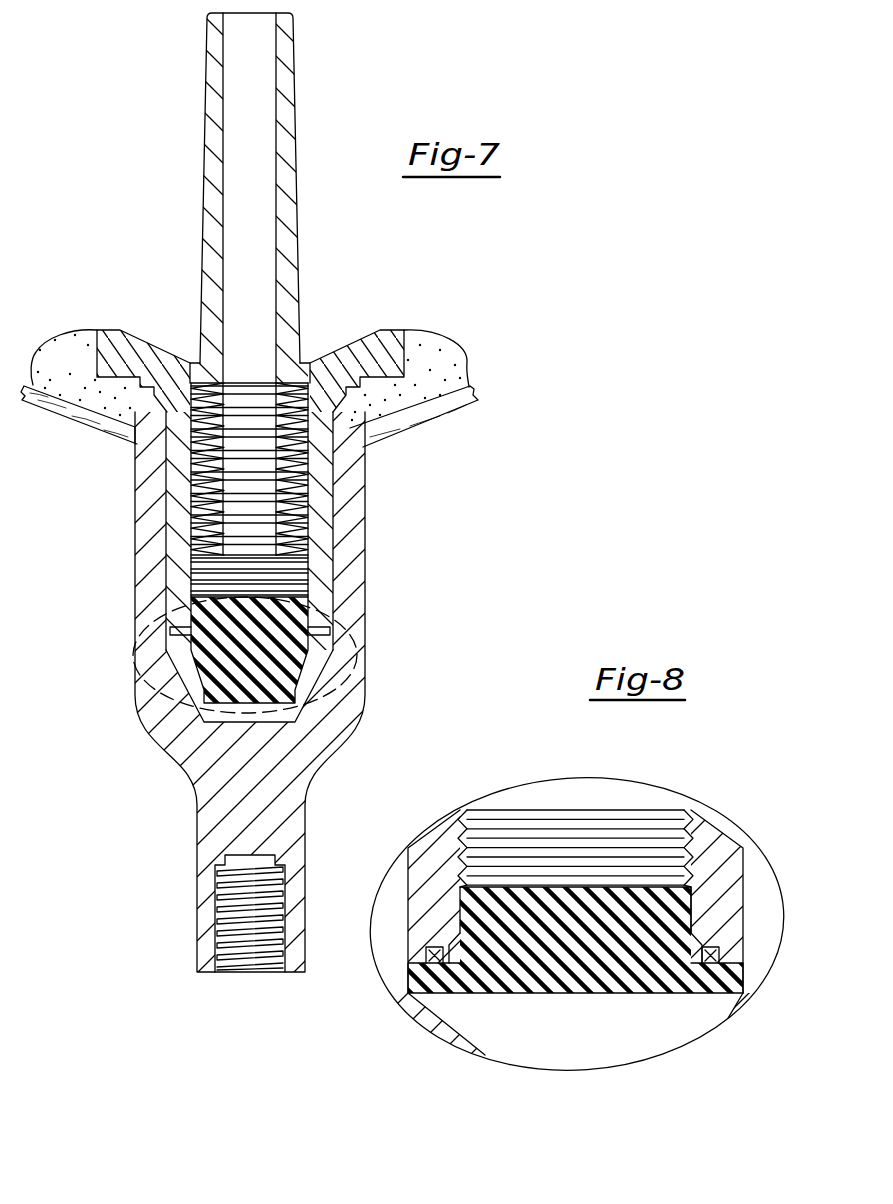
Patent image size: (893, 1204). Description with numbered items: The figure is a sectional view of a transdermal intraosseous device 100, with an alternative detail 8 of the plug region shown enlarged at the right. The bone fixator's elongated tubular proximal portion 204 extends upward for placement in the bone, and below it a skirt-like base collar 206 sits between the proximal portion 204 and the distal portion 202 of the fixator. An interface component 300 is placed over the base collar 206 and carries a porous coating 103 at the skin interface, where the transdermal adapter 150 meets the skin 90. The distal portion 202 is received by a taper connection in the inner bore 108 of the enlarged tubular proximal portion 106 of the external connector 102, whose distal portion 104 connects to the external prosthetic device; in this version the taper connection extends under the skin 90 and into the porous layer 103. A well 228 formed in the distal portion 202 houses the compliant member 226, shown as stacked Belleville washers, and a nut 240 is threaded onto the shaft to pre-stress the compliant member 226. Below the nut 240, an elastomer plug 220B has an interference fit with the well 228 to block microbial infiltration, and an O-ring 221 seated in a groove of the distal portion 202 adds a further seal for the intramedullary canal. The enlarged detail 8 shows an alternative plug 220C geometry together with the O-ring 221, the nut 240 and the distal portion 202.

In FIG. 7, the transdermal intraosseous device 100 is at (437, 533).
In FIG. 7, the proximal portion 204 is at (207, 137).
In FIG. 7, the base collar 206 is at (383, 345).
In FIG. 7, the distal portion 202 is at (327, 535).
In FIG. 8, the distal portion 202 is at (713, 845).
In FIG. 7, the inner bore 108 is at (180, 520).
In FIG. 7, the well 228 is at (205, 478).
In FIG. 7, the compliant member 226 is at (298, 492).
In FIG. 7, the nut 240 is at (302, 580).
In FIG. 8, the nut 240 is at (560, 830).
In FIG. 7, the plug 220B is at (283, 660).
In FIG. 8, the plug 220C is at (680, 987).
In FIG. 7, the O-ring 221 is at (173, 632).
In FIG. 8, the O-ring 221 is at (713, 950).
In FIG. 7, the external connector 102 is at (142, 722).
In FIG. 7, the proximal portion 106 is at (330, 738).
In FIG. 7, the distal portion 104 is at (210, 830).
In FIG. 7, the porous coating 103 is at (47, 371).
In FIG. 7, the transdermal adapter 150 is at (73, 440).
In FIG. 7, the interface component 300 is at (440, 342).
In FIG. 7, the skin 90 is at (465, 400).
In FIG. 7, the detail view callout 8 is at (135, 667).